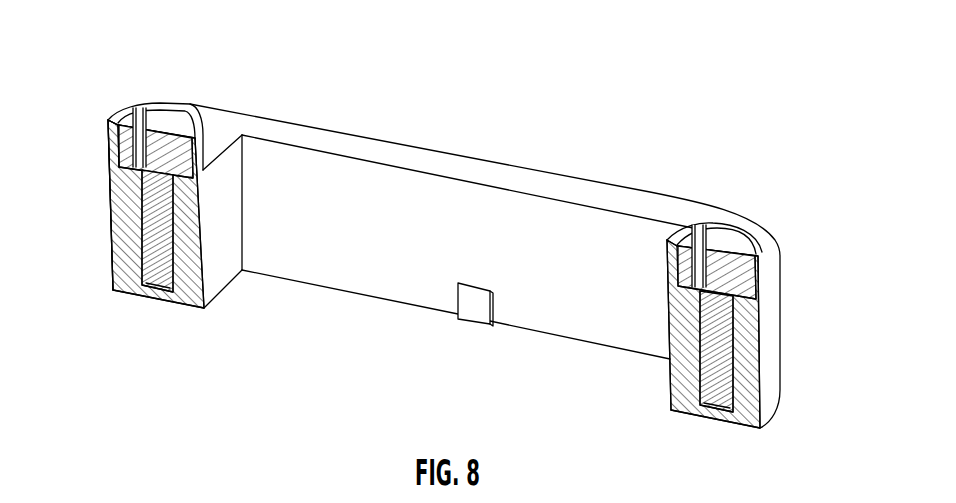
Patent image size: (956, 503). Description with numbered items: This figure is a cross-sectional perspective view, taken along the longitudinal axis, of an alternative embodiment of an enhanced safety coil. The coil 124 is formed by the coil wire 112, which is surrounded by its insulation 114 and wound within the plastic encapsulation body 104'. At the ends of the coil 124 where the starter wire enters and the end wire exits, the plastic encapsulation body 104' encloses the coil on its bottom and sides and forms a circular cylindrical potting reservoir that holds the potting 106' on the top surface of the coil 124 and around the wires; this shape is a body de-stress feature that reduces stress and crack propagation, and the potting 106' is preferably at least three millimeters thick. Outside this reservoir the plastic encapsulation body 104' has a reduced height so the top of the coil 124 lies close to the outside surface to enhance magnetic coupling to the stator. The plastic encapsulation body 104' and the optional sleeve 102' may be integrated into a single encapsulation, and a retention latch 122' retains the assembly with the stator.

The sleeve 102' is at (455, 265).
The plastic encapsulation body 104' is at (448, 248).
The potting 106' is at (437, 178).
The coil wire 112 is at (141, 108).
The insulation 114 is at (127, 117).
The retention latch 122' is at (495, 340).
The coil 124 is at (172, 280).